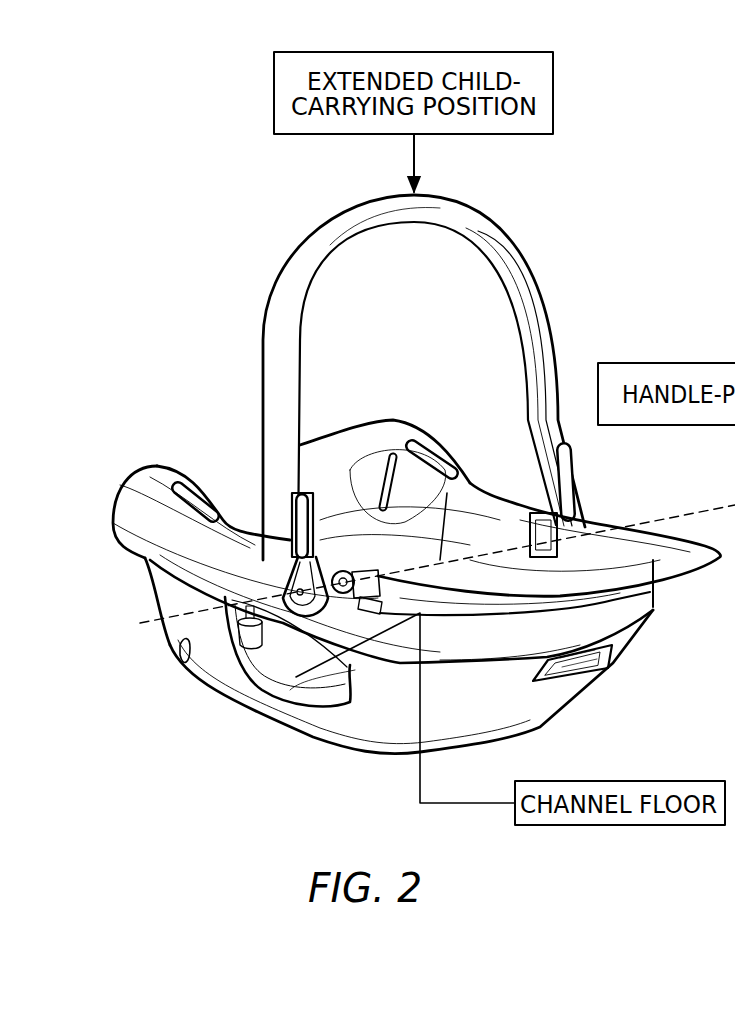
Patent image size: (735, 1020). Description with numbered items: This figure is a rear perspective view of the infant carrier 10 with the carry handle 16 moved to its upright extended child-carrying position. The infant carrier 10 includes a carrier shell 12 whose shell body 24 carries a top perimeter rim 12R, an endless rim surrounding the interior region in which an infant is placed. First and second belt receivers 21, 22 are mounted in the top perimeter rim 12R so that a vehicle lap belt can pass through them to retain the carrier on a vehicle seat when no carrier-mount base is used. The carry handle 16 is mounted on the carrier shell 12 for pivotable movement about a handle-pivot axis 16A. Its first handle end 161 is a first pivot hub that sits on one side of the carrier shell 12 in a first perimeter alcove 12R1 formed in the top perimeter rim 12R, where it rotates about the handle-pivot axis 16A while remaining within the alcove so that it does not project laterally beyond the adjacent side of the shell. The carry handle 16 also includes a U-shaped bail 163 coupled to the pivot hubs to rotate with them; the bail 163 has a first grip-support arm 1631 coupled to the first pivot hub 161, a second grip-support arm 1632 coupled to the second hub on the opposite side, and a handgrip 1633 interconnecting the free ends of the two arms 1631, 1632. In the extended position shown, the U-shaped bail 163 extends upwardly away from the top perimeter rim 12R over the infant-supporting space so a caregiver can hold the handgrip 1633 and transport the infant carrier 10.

The infant carrier 10 is at (223, 300).
The carrier shell 12 is at (262, 703).
The top perimeter rim 12R is at (515, 500).
The first perimeter alcove 12R1 is at (333, 563).
The carry handle 16 is at (488, 212).
The handle-pivot axis 16A is at (734, 355).
The first handle end 161 is at (268, 560).
The U-shaped bail 163 is at (532, 270).
The first grip-support arm 1631 is at (290, 520).
The second grip-support arm 1632 is at (549, 497).
The handgrip 1633 is at (376, 214).
The first belt receiver 21 is at (198, 483).
The second belt receiver 22 is at (434, 442).
The shell body 24 is at (620, 640).